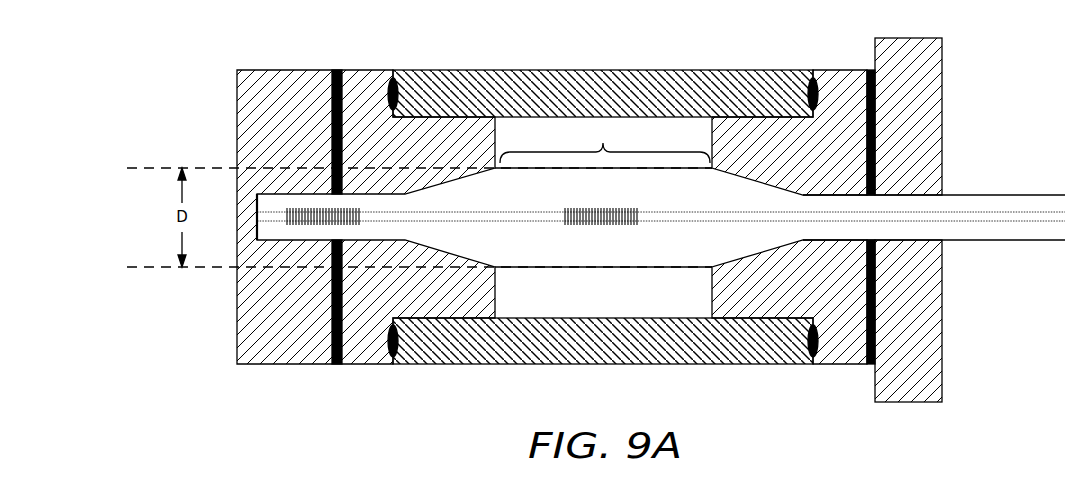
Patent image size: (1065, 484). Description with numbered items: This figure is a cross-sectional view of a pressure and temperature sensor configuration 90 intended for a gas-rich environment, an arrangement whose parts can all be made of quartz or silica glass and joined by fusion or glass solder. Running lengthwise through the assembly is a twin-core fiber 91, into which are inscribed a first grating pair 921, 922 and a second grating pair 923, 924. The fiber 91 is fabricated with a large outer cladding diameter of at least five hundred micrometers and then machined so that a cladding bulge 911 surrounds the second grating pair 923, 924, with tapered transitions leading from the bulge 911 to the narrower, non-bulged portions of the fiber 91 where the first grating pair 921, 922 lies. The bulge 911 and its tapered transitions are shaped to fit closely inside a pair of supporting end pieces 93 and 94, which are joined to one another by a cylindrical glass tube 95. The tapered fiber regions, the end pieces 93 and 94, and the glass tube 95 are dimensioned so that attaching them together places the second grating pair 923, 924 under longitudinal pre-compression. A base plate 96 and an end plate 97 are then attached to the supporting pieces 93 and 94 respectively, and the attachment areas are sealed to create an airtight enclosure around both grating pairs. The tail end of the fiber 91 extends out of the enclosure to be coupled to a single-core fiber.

The pressure and temperature sensor configuration 90 is at (591, 45).
The twin-core fiber 91 is at (983, 205).
The supporting end piece 93 is at (365, 78).
The supporting end piece 94 is at (842, 77).
The cylindrical glass tube 95 is at (688, 82).
The base plate 96 is at (238, 347).
The end plate 97 is at (932, 93).
The cladding bulge 911 is at (605, 142).
The first grating pair 921 is at (375, 209).
The first grating pair 922 is at (360, 214).
The second grating pair 923 is at (654, 209).
The second grating pair 924 is at (638, 214).